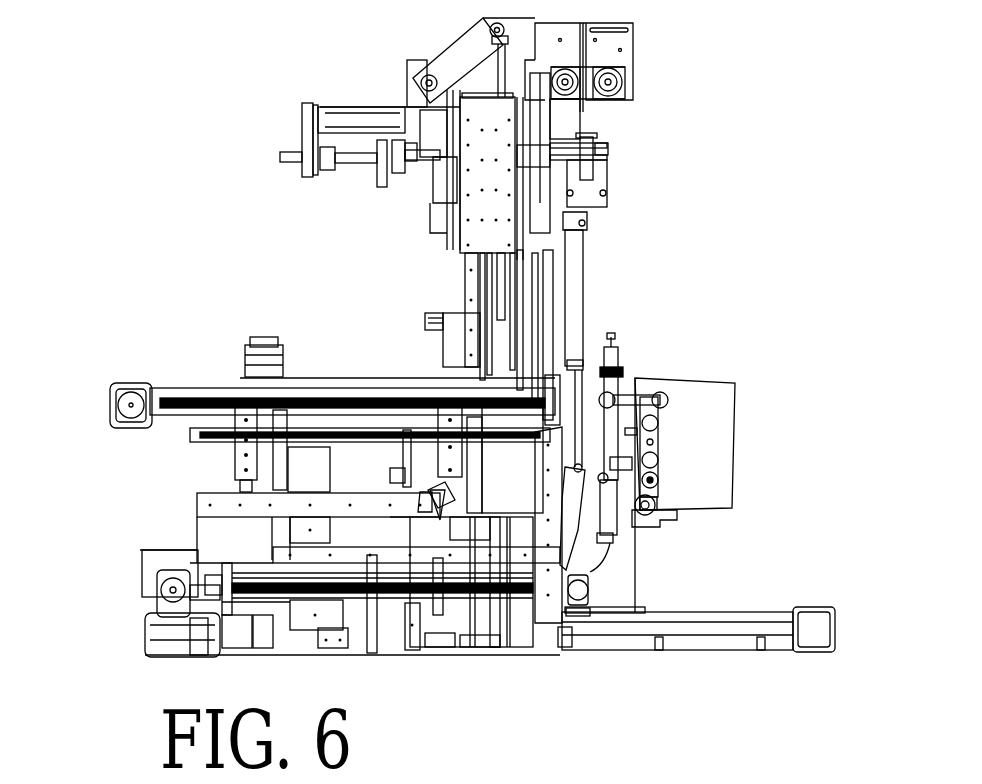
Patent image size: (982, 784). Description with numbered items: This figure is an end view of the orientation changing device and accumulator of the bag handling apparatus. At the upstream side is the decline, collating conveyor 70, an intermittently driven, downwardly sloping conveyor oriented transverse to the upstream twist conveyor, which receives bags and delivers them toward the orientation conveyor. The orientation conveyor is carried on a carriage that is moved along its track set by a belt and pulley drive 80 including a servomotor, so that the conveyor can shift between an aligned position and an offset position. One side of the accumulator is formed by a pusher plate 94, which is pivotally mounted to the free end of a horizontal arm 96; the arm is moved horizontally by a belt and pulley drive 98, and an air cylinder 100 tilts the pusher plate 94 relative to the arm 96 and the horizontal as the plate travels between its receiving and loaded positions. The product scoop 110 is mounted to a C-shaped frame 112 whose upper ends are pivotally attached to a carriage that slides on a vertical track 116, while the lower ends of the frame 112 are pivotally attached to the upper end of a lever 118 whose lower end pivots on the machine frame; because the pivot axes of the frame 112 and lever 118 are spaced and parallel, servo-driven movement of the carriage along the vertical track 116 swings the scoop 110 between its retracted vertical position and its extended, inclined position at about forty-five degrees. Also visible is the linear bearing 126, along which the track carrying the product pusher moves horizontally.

The decline, collating conveyor 70 is at (404, 298).
The belt and pulley drive 80 is at (118, 405).
The pusher plate 94 is at (455, 440).
The horizontal arm 96 is at (217, 512).
The belt and pulley drive 98 is at (160, 596).
The air cylinder 100 is at (420, 488).
The product scoop 110 is at (540, 252).
The C-shaped frame 112 is at (540, 277).
The vertical track 116 is at (493, 185).
The lever 118 is at (540, 335).
The linear bearing 126 is at (582, 138).